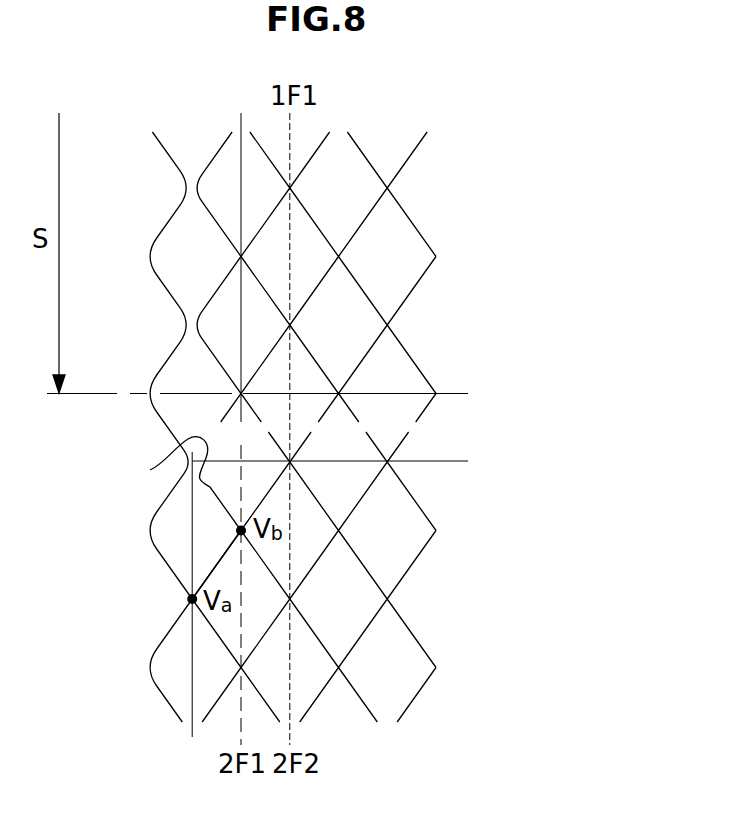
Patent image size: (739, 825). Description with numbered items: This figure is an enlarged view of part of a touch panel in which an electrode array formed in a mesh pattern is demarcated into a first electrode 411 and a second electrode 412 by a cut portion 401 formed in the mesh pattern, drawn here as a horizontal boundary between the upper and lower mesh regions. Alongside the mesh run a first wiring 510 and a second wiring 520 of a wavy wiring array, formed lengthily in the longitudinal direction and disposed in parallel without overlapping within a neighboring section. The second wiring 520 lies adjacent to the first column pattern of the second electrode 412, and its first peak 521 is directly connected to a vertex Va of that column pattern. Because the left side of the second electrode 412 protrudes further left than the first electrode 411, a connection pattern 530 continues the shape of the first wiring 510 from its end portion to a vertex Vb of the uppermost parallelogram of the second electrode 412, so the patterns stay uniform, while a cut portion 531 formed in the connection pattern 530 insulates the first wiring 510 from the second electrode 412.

The first wiring 510 is at (214, 157).
The second wiring 520 is at (168, 221).
The first electrode 411 is at (499, 251).
The second electrode 412 is at (499, 571).
The cut portion 401 is at (416, 423).
The cut portion 531 is at (159, 476).
The connection pattern 530 is at (150, 470).
The first peak 521 is at (186, 600).